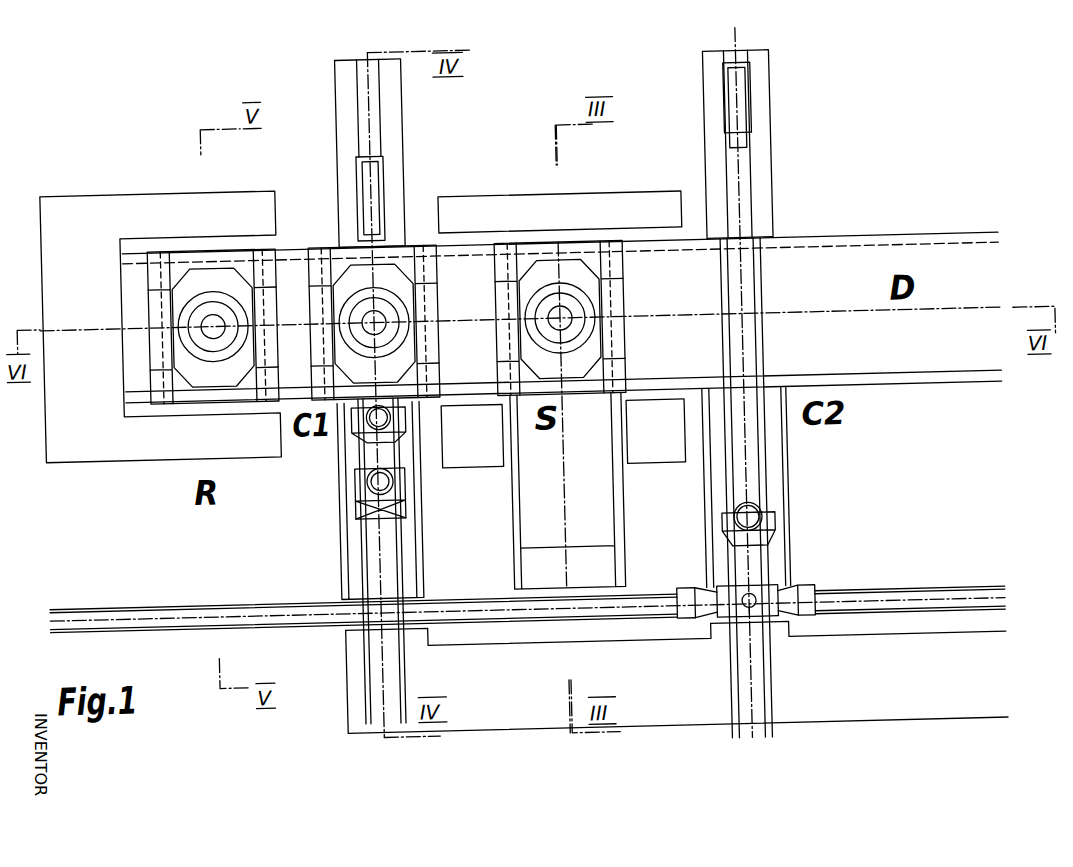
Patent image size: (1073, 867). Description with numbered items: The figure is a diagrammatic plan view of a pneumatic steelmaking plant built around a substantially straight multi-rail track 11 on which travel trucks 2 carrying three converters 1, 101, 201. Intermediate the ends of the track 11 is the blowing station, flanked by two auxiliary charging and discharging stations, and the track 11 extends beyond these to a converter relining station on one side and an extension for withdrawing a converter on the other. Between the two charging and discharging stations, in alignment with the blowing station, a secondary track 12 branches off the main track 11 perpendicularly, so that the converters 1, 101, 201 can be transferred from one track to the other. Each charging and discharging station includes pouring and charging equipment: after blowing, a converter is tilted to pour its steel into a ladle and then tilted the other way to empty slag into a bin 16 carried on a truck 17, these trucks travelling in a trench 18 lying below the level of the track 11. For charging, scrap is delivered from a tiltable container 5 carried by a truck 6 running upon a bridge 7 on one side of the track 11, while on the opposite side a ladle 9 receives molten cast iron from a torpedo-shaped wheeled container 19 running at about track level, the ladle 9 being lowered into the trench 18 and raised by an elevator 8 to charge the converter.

The converter 1 is at (582, 303).
The truck 2 is at (156, 333).
The tiltable container 5 is at (375, 207).
The truck 6 is at (385, 179).
The bridge 7 is at (399, 139).
The elevator 8 is at (342, 438).
The ladle 9 is at (372, 415).
The multi-rail track 11 is at (929, 385).
The secondary track 12 is at (609, 556).
The bin 16 is at (373, 476).
The truck 17 is at (398, 486).
The trench 18 is at (369, 535).
The torpedo-shaped wheeled container 19 is at (758, 620).
The converter 101 is at (395, 306).
The converter 201 is at (207, 336).